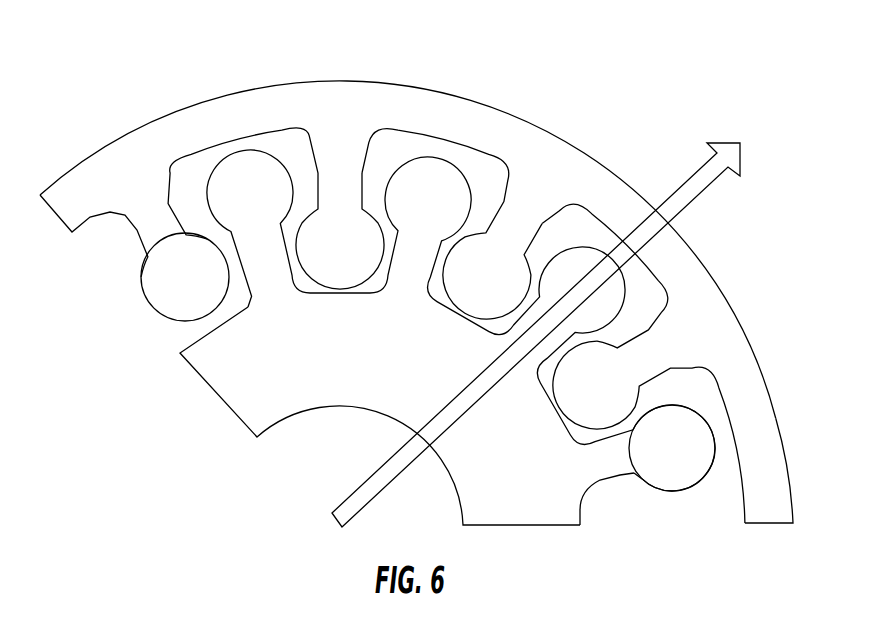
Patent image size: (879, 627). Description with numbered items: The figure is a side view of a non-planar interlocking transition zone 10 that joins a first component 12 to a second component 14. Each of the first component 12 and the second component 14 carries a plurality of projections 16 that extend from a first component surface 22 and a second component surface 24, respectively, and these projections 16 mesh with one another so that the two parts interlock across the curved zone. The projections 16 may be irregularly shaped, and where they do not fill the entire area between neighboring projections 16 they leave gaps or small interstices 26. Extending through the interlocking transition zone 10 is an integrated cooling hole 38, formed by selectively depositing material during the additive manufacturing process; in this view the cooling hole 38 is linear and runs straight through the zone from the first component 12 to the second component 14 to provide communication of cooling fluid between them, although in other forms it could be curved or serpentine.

The interlocking transition zone 10 is at (681, 109).
The first component 12 is at (233, 373).
The second component 14 is at (171, 138).
The projection 16 is at (180, 278).
The first component surface 22 is at (582, 512).
The second component surface 24 is at (745, 500).
The interstice 26 is at (493, 181).
The cooling hole 38 is at (640, 233).